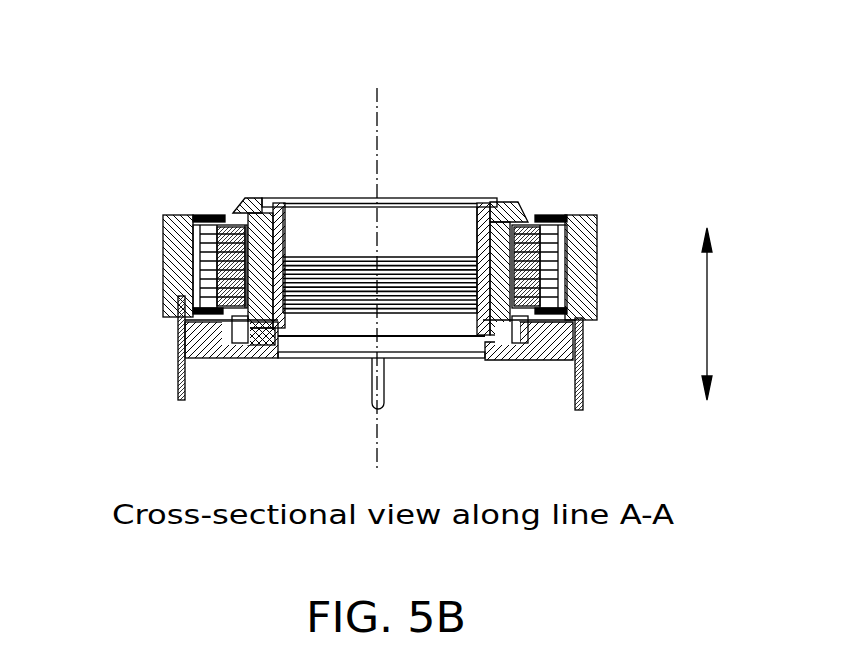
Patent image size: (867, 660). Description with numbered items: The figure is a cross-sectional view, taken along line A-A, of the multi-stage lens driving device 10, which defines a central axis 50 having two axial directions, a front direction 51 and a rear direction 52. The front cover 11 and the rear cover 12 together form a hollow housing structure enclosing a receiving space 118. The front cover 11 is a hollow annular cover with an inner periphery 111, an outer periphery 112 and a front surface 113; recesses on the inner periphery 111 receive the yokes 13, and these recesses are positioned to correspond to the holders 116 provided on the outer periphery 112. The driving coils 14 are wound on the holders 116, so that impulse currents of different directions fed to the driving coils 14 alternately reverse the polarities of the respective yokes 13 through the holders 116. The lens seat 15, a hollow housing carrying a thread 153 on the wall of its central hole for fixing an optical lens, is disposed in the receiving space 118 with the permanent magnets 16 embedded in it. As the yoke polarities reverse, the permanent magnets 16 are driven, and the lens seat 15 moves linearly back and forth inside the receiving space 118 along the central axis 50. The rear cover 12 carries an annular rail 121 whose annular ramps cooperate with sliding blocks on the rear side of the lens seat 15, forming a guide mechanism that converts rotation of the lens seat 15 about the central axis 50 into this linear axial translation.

The multi-stage lens driving device 10 is at (630, 178).
The front cover 11 is at (229, 207).
The inner periphery 111 is at (322, 198).
The outer periphery 112 is at (172, 292).
The front surface 113 is at (506, 205).
The holders 116 is at (193, 234).
The receiving space 118 is at (428, 198).
The rear cover 12 is at (200, 360).
The annular rail 121 is at (256, 360).
The yokes 13 is at (228, 210).
The driving coils 14 is at (200, 213).
The lens seat 15 is at (490, 212).
The thread 153 is at (320, 316).
The permanent magnets 16 is at (264, 205).
The central axis 50 is at (377, 92).
The front direction 51 is at (707, 250).
The rear direction 52 is at (707, 370).